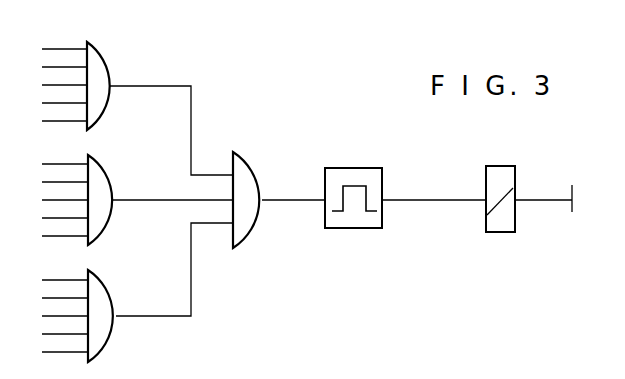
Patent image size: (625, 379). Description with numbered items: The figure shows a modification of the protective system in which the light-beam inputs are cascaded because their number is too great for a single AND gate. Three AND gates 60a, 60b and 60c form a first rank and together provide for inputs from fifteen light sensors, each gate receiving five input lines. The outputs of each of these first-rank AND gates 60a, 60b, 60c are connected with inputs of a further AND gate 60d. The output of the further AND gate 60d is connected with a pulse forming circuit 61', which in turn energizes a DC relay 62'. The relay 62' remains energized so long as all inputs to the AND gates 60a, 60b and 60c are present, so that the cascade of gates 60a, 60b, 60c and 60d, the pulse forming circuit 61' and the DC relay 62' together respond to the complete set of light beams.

The AND gate 60a is at (102, 73).
The AND gate 60b is at (98, 181).
The AND gate 60c is at (97, 292).
The further AND gate 60d is at (242, 174).
The pulse forming circuit 61' is at (405, 178).
The DC relay 62' is at (529, 182).